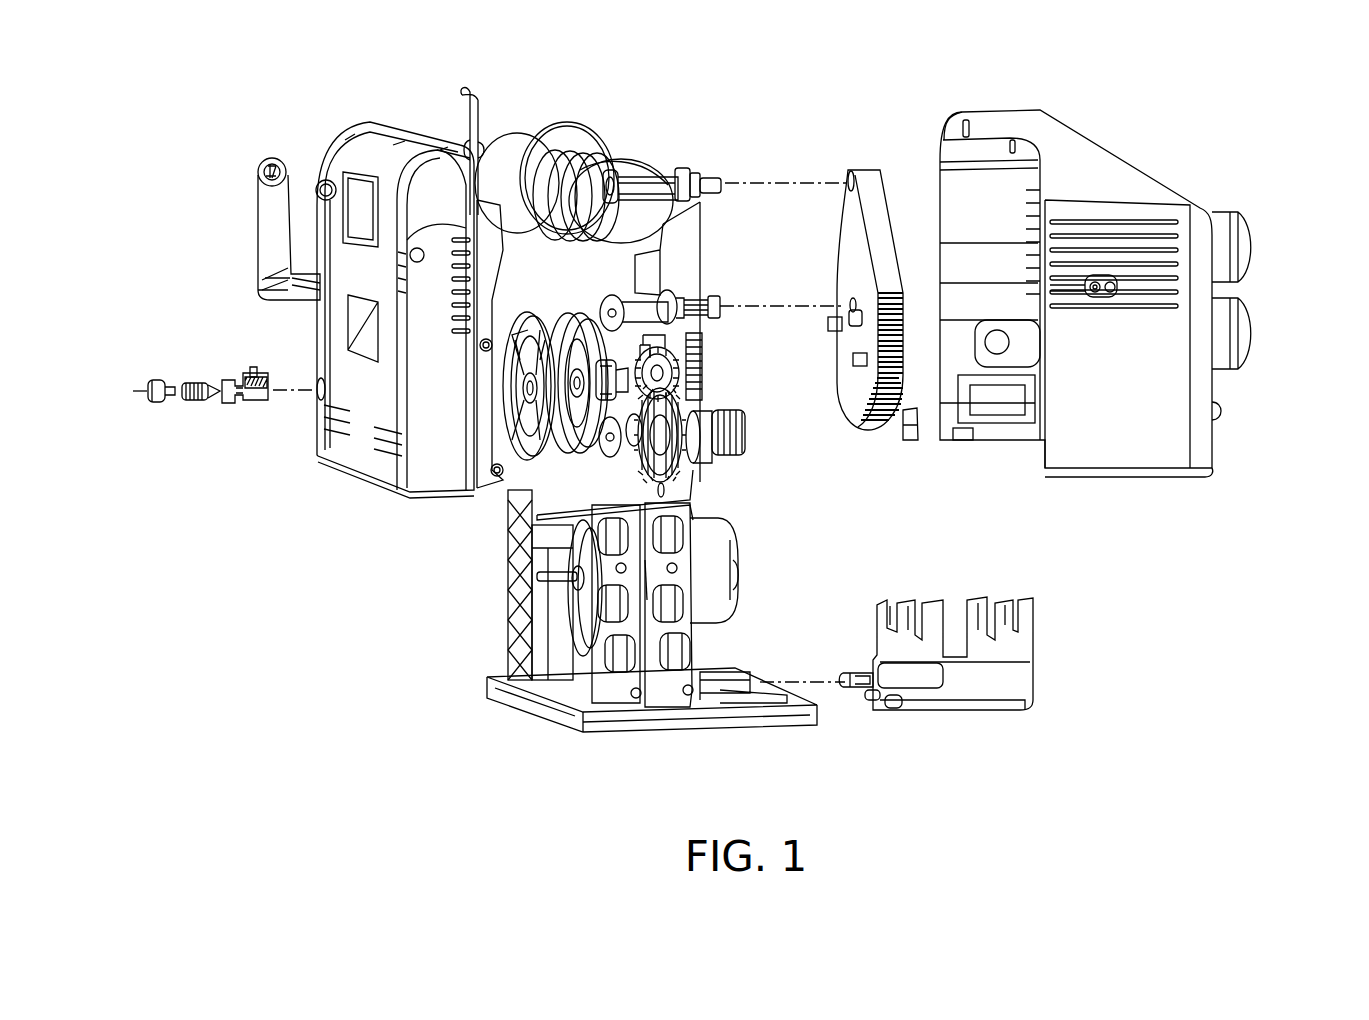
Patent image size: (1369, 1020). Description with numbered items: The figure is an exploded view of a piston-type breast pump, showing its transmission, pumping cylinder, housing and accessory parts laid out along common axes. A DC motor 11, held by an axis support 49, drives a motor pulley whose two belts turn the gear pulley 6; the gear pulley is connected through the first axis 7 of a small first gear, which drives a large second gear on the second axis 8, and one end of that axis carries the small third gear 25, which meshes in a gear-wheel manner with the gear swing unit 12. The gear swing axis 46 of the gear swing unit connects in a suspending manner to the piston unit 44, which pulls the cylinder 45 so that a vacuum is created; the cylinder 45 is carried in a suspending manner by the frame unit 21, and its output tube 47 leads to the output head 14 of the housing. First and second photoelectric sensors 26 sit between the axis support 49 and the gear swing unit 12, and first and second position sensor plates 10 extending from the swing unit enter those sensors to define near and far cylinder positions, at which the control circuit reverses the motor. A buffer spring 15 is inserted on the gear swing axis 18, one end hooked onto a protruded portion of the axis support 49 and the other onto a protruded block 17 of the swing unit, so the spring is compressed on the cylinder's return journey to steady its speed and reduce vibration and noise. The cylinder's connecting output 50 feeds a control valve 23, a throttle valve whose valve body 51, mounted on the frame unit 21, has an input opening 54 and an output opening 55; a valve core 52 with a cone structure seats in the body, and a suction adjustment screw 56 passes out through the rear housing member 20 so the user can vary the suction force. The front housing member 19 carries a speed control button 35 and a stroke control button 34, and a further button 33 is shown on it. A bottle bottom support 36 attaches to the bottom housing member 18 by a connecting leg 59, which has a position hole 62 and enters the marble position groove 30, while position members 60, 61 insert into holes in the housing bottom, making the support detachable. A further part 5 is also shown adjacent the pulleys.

The belt pulley 5 is at (525, 313).
The gear pulley 6 is at (565, 315).
The first axis 7 is at (598, 315).
The second axis 8 is at (697, 440).
The position sensor plates 10 is at (858, 362).
The DC motor 11 is at (717, 562).
The gear swing unit 12 is at (870, 207).
The output head 14 is at (1110, 280).
The buffer spring 15 is at (713, 298).
The protruded block 17 is at (848, 310).
The gear swing axis 18 is at (716, 308).
The front housing member 19 is at (1122, 428).
The rear housing member 20 is at (360, 440).
The frame unit 21 is at (543, 598).
The control valve 23 is at (143, 473).
The third gear 25 is at (747, 435).
The photoelectric sensors 26 is at (698, 387).
The marble position groove 30 is at (740, 677).
The button 33 is at (1222, 415).
The stroke control button 34 is at (1247, 335).
The speed control button 35 is at (1243, 243).
The bottle bottom support 36 is at (993, 680).
The piston unit 44 is at (608, 157).
The cylinder 45 is at (523, 133).
The gear swing axis 46 is at (705, 180).
The output tube 47 is at (458, 120).
The axis support 49 is at (672, 492).
The connecting output 50 is at (481, 150).
The valve body 51 is at (243, 402).
The valve core 52 is at (200, 402).
The input opening 54 is at (273, 383).
The output opening 55 is at (253, 368).
The suction adjustment screw 56 is at (168, 400).
The connecting leg 59 is at (853, 684).
The position member 60 is at (868, 701).
The position member 61 is at (890, 699).
The position hole 62 is at (848, 677).